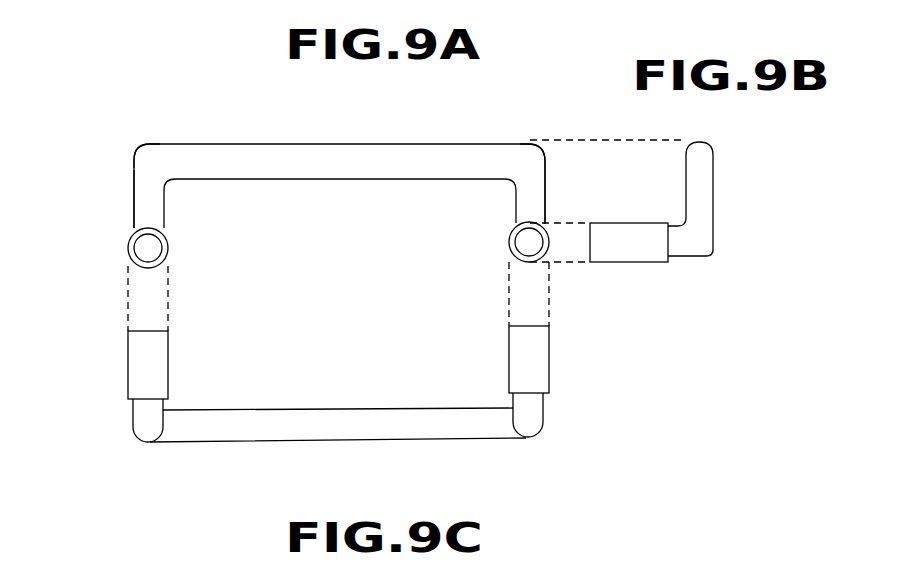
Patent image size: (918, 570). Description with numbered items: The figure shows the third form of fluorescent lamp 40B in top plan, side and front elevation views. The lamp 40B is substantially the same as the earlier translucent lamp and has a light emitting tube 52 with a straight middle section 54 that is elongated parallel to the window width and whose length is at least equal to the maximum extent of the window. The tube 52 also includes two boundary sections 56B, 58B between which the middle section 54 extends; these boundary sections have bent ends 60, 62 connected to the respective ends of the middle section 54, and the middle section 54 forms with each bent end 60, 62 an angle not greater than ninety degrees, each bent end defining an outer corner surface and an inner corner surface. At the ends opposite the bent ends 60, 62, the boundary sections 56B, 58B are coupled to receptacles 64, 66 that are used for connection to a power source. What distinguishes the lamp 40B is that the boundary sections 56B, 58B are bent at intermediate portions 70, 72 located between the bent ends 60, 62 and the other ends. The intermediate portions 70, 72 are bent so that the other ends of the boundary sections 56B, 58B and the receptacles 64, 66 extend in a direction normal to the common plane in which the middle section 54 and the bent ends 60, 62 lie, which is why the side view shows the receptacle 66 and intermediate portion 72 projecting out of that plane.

In FIG. 9A, the fluorescent lamp 40B is at (336, 196).
In FIG. 9A, the light emitting tube 52 is at (396, 140).
In FIG. 9A, the middle section 54 is at (350, 181).
In FIG. 9C, the middle section 54 is at (355, 441).
In FIG. 9A, the boundary section 56B is at (130, 198).
In FIG. 9A, the boundary section 58B is at (548, 196).
In FIG. 9A, the bent end 60 is at (134, 152).
In FIG. 9A, the bent end 62 is at (548, 148).
In FIG. 9B, the bent end 62 is at (700, 140).
In FIG. 9A, the receptacle 64 is at (168, 248).
In FIG. 9C, the receptacle 64 is at (168, 368).
In FIG. 9A, the receptacle 66 is at (512, 243).
In FIG. 9B, the receptacle 66 is at (630, 262).
In FIG. 9C, the receptacle 66 is at (549, 360).
In FIG. 9C, the intermediate portion 70 is at (148, 443).
In FIG. 9B, the intermediate portion 72 is at (710, 256).
In FIG. 9C, the intermediate portion 72 is at (530, 439).